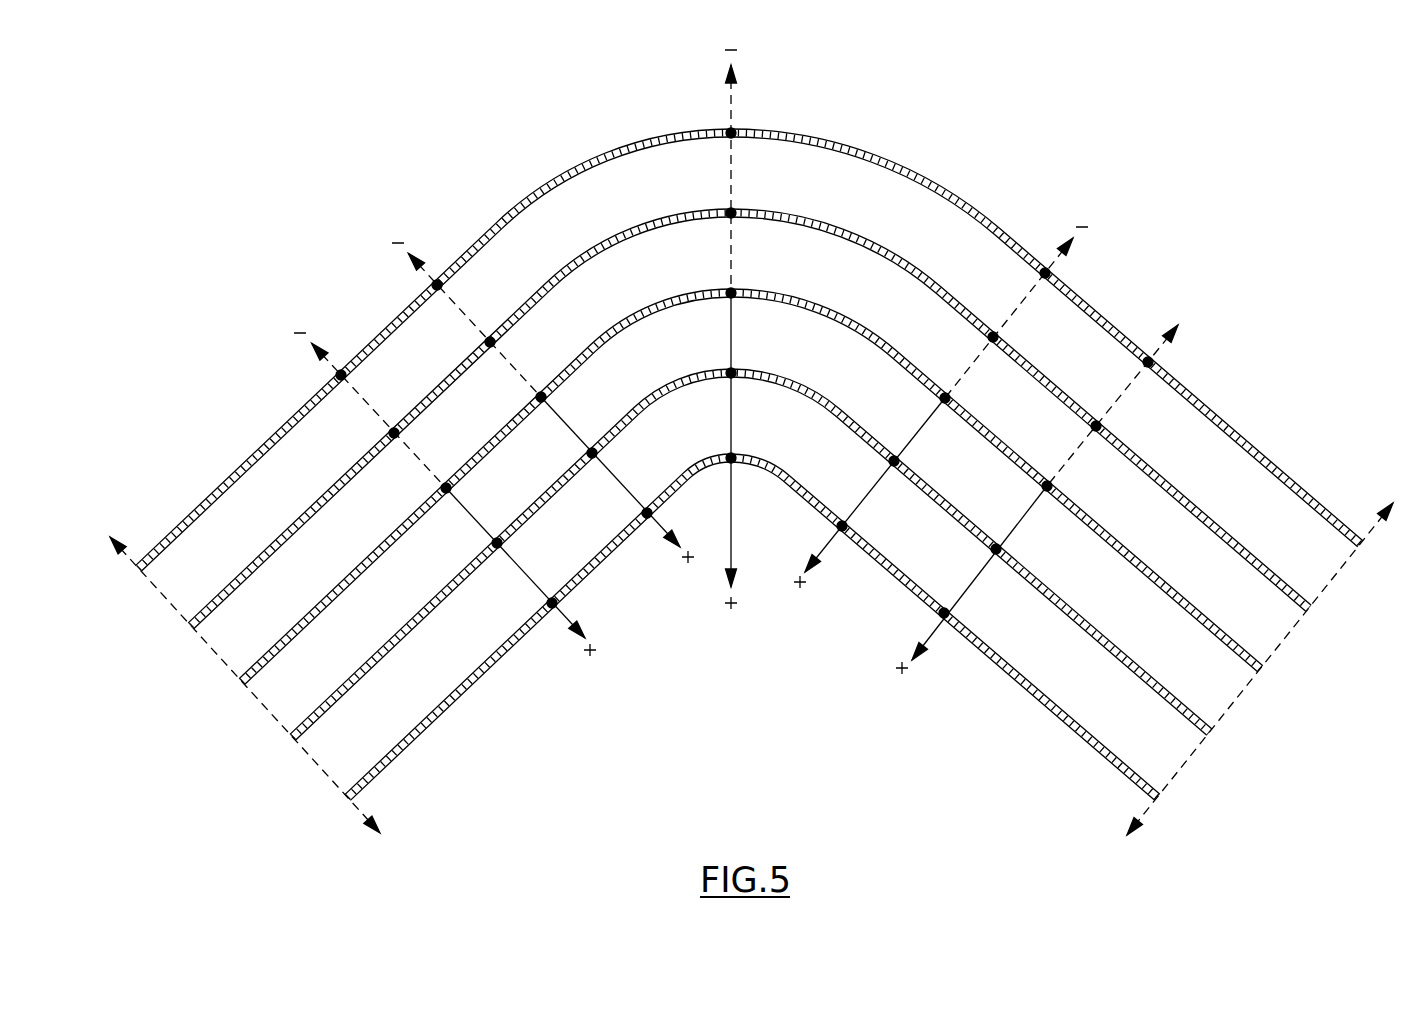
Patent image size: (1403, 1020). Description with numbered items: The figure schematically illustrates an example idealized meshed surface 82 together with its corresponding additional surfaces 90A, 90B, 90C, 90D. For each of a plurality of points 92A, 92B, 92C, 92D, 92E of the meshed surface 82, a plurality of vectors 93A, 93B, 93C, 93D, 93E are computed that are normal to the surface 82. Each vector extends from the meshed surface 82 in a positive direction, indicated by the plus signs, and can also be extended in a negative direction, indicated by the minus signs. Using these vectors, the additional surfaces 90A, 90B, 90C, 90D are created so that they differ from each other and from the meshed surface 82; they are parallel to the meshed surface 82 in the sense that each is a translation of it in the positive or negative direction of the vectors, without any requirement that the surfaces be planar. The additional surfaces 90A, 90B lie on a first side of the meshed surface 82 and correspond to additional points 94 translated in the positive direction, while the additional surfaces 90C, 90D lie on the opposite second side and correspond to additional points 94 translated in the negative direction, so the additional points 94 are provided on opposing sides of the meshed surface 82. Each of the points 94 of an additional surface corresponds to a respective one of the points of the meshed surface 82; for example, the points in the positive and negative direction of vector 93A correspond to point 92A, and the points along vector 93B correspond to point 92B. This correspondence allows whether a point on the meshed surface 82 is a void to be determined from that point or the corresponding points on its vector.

The idealized meshed surface 82 is at (244, 684).
The additional surface 90A is at (360, 684).
The additional surface 90B is at (365, 793).
The additional surface 90C is at (350, 483).
The additional surface 90D is at (384, 330).
The point of the meshed surface 92A is at (445, 494).
The point of the meshed surface 92B is at (543, 403).
The point of the meshed surface 92C is at (731, 329).
The point of the meshed surface 92D is at (941, 407).
The point of the meshed surface 92E is at (1037, 499).
The vector 93A is at (520, 572).
The vector 93B is at (617, 485).
The vector 93C is at (729, 398).
The vector 93D is at (872, 487).
The vector 93E is at (973, 580).
The additional points 94 is at (734, 208).